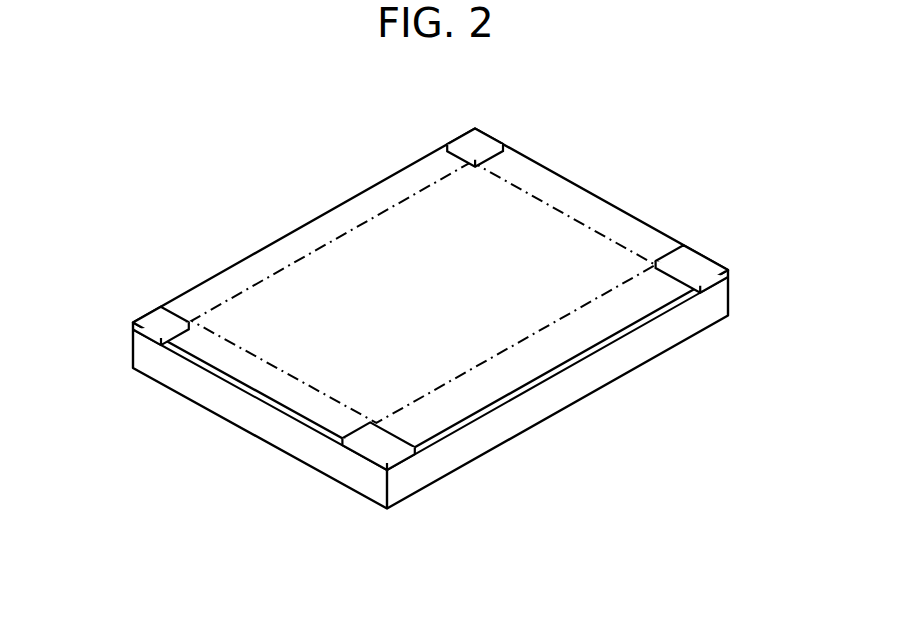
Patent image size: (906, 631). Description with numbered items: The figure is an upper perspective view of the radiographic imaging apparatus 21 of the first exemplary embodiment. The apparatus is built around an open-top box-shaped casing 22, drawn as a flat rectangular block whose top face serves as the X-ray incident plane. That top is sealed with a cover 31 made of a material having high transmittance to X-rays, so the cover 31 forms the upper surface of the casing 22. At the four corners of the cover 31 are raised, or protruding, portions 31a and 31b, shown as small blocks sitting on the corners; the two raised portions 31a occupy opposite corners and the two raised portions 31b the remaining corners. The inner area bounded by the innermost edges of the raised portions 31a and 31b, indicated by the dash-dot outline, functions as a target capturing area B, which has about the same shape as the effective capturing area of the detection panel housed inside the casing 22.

The radiographic imaging apparatus 21 is at (598, 199).
The casing 22 is at (175, 380).
The cover 31 is at (352, 265).
The raised portion 31a is at (468, 138).
The raised portion 31b is at (703, 265).
The target capturing area B is at (527, 337).